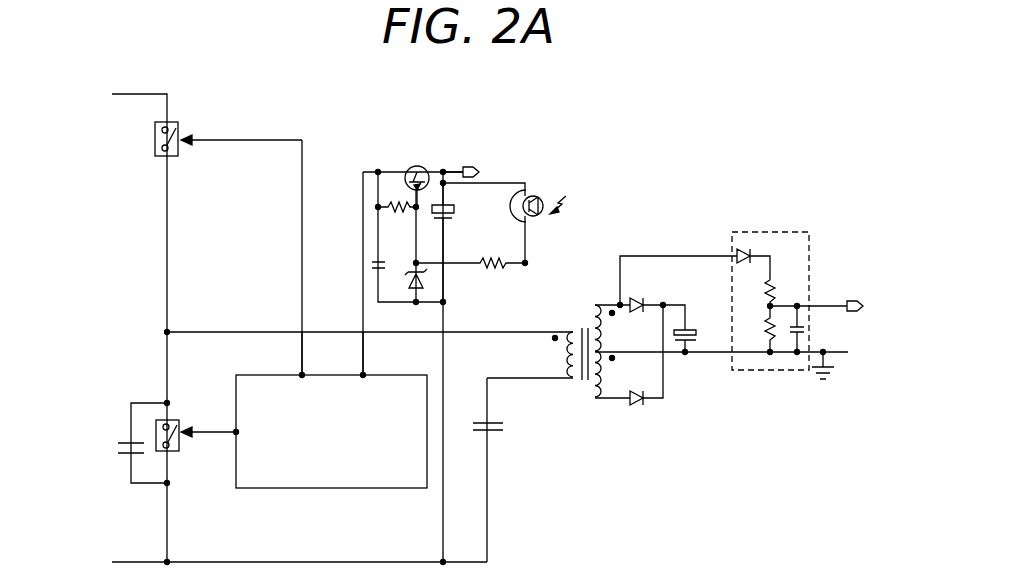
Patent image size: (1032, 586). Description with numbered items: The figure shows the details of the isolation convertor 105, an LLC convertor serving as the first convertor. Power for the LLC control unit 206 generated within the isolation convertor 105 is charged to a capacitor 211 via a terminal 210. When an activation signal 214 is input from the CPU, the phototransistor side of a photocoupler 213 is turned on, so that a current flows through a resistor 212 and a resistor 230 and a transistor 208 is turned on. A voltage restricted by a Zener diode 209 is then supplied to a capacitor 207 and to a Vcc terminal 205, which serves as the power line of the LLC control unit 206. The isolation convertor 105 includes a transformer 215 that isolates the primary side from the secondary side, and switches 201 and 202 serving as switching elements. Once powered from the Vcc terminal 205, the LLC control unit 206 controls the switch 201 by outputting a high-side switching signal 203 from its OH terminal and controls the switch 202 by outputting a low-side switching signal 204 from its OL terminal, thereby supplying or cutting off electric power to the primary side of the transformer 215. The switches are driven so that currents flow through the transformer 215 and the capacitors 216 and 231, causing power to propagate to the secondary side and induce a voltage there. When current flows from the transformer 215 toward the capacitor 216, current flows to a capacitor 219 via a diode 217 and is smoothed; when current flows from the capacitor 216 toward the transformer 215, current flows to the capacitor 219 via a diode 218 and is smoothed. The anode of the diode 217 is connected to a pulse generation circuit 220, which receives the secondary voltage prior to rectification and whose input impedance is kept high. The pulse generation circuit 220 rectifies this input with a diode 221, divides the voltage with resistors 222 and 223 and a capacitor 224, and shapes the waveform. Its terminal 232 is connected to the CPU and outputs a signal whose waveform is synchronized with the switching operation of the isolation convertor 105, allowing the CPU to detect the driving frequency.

The isolation convertor 105 is at (688, 124).
The switch 201 is at (154, 140).
The switch 202 is at (174, 418).
The high-side switching signal 203 is at (301, 372).
The low-side switching signal 204 is at (234, 436).
The Vcc terminal 205 is at (365, 372).
The LLC control unit 206 is at (333, 490).
The capacitor 207 is at (375, 262).
The transistor 208 is at (417, 165).
The Zener diode 209 is at (408, 280).
The terminal 210 is at (469, 166).
The capacitor 211 is at (455, 210).
The resistor 212 is at (496, 268).
The photocoupler 213 is at (540, 195).
The activation signal 214 is at (568, 206).
The transformer 215 is at (583, 325).
The capacitor 216 is at (496, 430).
The diode 217 is at (640, 300).
The diode 218 is at (637, 405).
The capacitor 219 is at (697, 338).
The pulse generation circuit 220 is at (810, 246).
The diode 221 is at (742, 250).
The resistor 222 is at (775, 283).
The resistor 223 is at (768, 330).
The capacitor 224 is at (807, 334).
The resistor 230 is at (397, 203).
The capacitor 231 is at (122, 450).
The terminal 232 is at (853, 300).